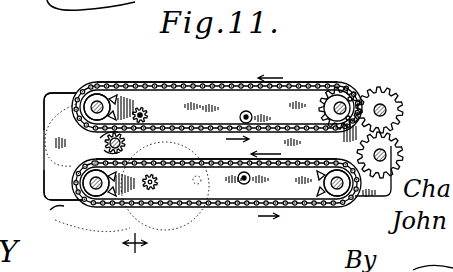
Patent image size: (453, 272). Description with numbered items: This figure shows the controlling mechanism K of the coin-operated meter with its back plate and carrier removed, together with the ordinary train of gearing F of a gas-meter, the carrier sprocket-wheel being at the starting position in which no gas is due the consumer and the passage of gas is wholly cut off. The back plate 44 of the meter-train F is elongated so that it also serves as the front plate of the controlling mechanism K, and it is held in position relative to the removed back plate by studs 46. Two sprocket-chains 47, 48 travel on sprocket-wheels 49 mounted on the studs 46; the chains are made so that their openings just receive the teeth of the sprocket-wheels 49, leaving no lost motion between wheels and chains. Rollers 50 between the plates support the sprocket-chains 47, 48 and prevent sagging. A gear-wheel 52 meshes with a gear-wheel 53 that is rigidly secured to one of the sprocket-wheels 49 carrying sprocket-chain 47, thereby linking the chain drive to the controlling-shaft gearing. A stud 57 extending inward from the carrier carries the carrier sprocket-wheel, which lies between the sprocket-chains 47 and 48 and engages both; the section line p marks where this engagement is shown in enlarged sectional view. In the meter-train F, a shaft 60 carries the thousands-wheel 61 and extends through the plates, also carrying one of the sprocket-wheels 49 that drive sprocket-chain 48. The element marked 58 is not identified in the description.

The back plate of the meter-train 44 is at (68, 96).
The studs 46 is at (97, 101).
The sprocket-chain 47 is at (208, 78).
The sprocket-chain 48 is at (95, 182).
The sprocket-wheels 49 is at (78, 104).
The rollers 50 is at (251, 116).
The gear-wheel 52 is at (403, 104).
The gear-wheel 53 is at (342, 100).
The stud 57 is at (393, 155).
The pinion 58 is at (94, 145).
The shaft 60 is at (78, 196).
The thousands-wheel 61 is at (62, 210).
The controlling mechanism K is at (171, 73).
The train of gearing of a gas-meter F is at (174, 245).
The section line p p is at (137, 108).